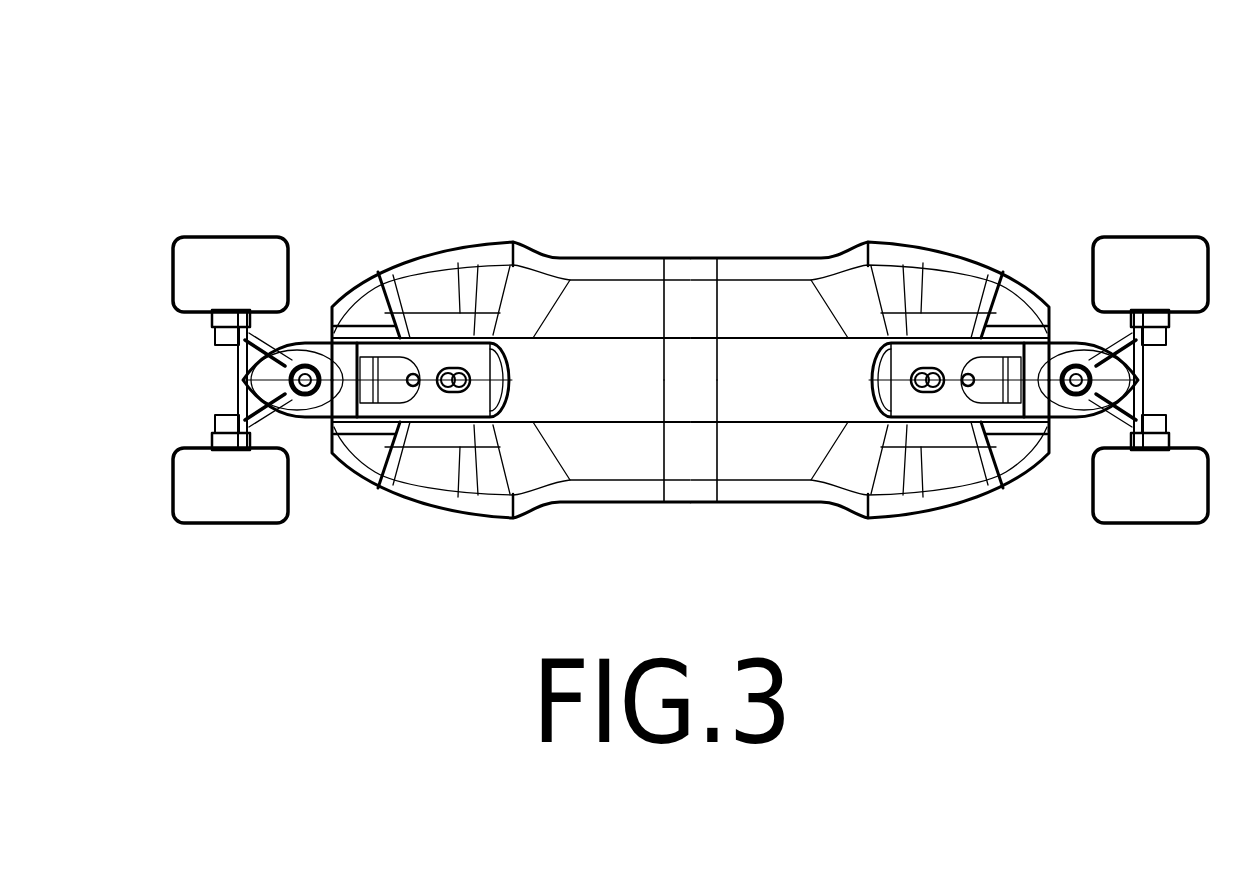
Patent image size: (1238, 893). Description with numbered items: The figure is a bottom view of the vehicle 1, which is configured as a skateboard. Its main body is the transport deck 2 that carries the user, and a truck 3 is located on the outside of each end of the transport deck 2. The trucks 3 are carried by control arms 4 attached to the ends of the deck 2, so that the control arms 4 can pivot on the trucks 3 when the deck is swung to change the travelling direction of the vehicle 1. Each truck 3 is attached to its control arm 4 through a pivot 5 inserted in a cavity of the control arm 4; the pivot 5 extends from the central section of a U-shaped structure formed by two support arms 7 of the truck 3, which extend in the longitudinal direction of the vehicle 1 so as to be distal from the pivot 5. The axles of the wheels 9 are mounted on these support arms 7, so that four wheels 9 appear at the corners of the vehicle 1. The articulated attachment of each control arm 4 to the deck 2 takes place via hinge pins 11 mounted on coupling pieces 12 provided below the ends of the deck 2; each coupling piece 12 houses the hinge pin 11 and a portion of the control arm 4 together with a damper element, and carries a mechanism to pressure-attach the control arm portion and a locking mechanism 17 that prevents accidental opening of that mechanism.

The vehicle 1 is at (693, 197).
The transport deck 2 is at (785, 462).
The truck 3 is at (185, 385).
The control arm 4 is at (280, 407).
The pivot 5 is at (277, 395).
The support arm 7 is at (258, 343).
The wheel 9 is at (251, 265).
The hinge pin 11 is at (352, 295).
The coupling piece 12 is at (440, 345).
The locking mechanism 17 is at (463, 402).